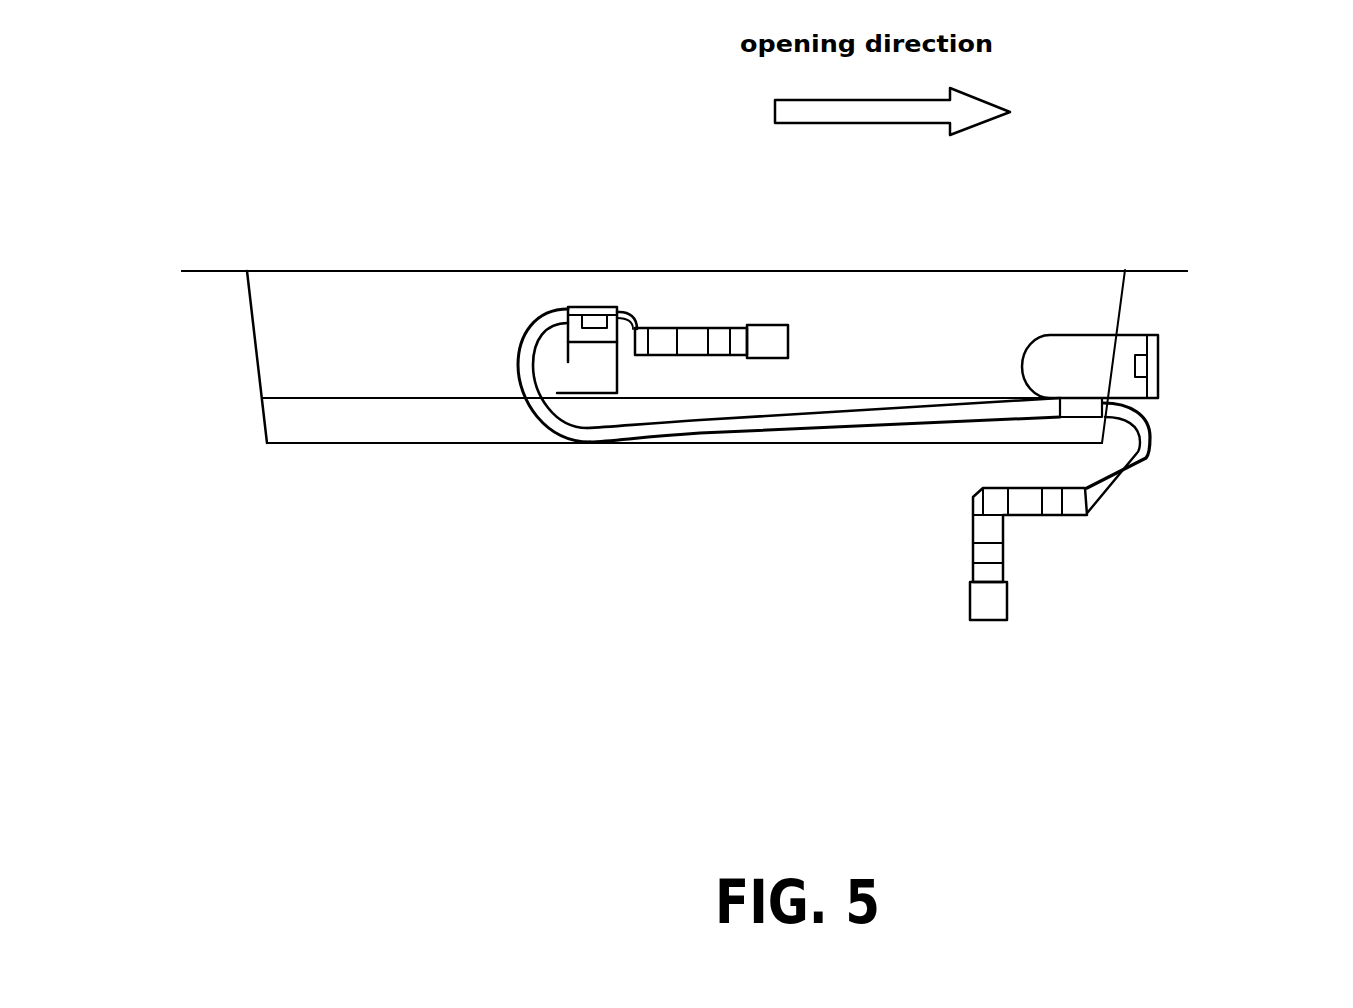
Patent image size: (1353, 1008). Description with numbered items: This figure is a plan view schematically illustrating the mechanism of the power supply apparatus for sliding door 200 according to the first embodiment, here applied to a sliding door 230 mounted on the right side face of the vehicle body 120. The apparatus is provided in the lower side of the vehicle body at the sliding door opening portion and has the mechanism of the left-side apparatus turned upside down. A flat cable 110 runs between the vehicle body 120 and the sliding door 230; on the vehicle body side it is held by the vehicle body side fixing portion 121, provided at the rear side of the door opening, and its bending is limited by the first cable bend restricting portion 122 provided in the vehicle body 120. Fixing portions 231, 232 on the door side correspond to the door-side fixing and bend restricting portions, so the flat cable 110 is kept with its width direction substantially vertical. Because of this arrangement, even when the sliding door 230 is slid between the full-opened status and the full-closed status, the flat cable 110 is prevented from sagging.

The power supply apparatus for sliding door 200 is at (572, 172).
The sliding door 230 is at (1027, 267).
The vehicle body 120 is at (427, 447).
The connector 231 is at (603, 307).
The connector housing 232 is at (558, 377).
The flat cable 110 is at (815, 430).
The first cable bend restricting portion 122 is at (1100, 333).
The vehicle body side fixing portion 121 is at (1078, 418).